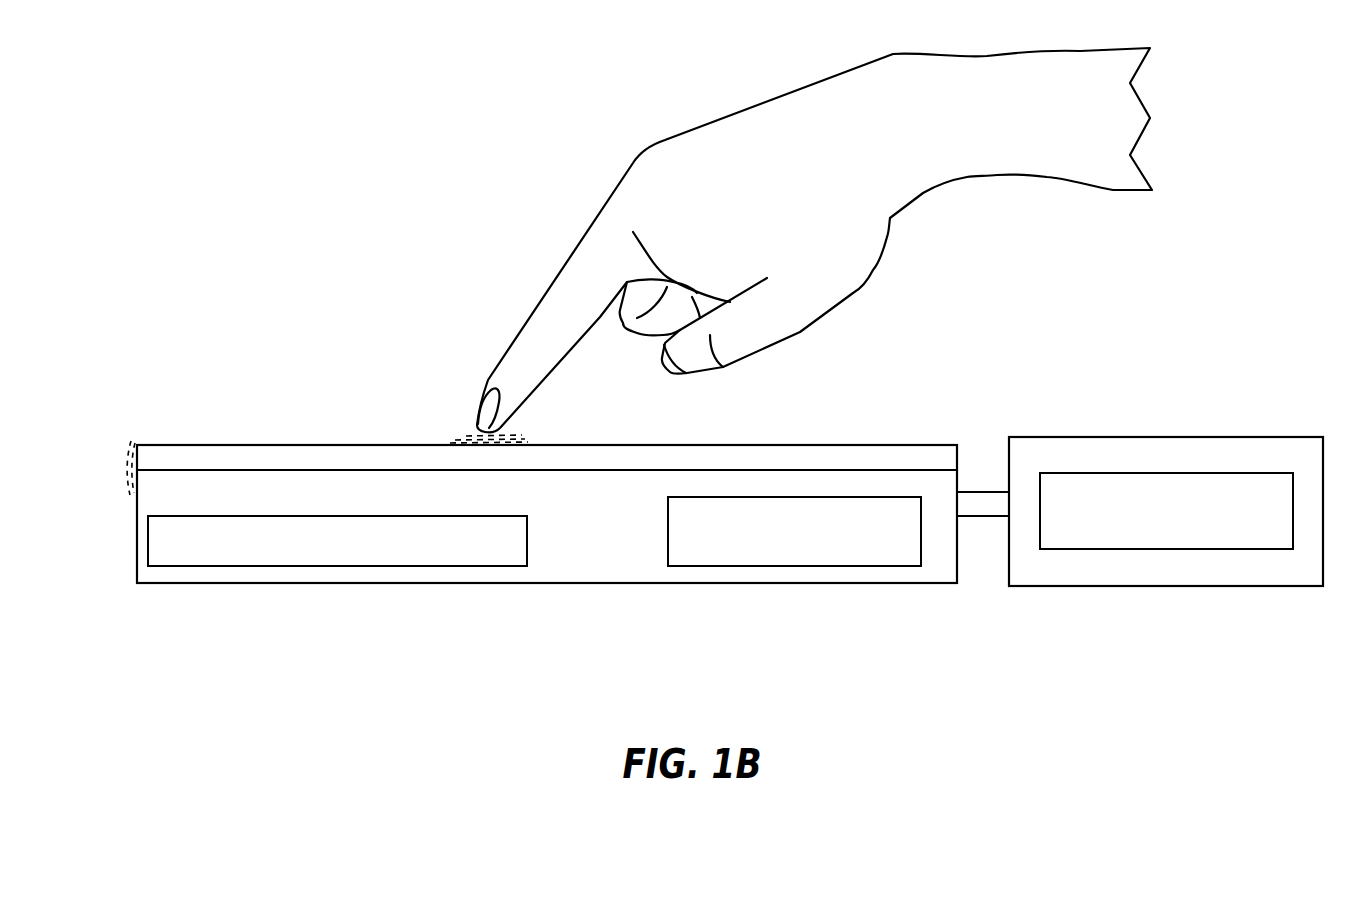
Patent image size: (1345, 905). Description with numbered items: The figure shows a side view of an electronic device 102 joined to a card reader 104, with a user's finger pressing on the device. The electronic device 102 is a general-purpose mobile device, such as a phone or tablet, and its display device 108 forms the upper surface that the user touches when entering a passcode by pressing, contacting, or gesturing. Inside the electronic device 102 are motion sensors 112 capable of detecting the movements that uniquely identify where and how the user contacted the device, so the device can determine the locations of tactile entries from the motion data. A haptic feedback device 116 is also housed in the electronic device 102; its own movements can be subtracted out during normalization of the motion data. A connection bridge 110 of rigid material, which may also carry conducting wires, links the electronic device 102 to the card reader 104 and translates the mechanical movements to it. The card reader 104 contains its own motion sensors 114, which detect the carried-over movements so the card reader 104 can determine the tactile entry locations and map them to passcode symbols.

The electronic device 102 is at (138, 555).
The card reader 104 is at (1090, 437).
The display device 108 is at (175, 455).
The connection bridge 110 is at (972, 505).
The motion sensors 112 is at (180, 516).
The motion sensors 114 is at (1258, 472).
The haptic feedback device 116 is at (912, 497).